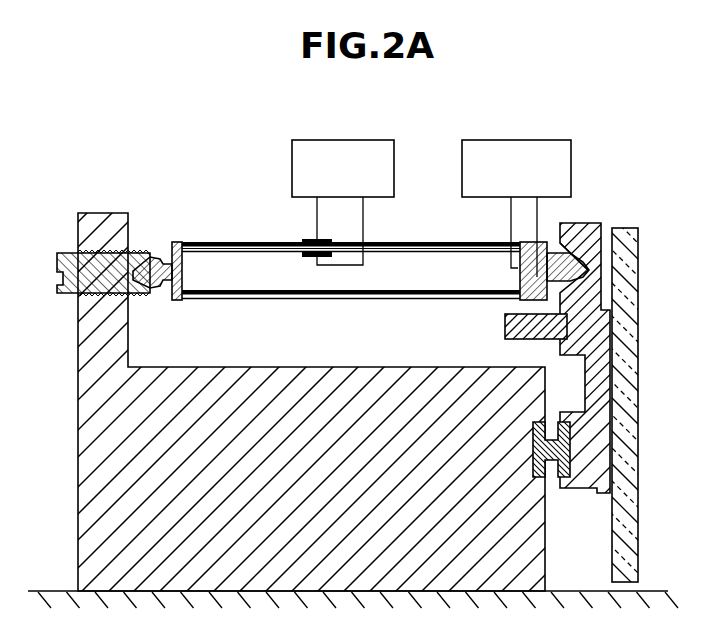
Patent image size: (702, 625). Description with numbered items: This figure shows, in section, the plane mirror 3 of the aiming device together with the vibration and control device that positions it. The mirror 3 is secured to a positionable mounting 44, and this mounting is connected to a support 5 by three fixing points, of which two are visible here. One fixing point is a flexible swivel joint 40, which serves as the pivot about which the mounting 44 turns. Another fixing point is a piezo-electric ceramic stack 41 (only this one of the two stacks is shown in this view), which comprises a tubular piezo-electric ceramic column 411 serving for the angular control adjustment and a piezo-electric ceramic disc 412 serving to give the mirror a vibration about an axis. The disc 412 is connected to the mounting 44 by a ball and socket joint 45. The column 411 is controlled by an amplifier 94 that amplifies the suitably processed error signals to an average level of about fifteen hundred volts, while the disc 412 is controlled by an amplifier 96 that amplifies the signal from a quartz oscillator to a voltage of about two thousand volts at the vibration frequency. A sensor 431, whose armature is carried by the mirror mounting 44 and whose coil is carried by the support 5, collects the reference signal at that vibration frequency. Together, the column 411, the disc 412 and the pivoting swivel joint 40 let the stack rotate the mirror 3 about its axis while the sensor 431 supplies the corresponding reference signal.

The plane mirror 3 is at (633, 246).
The support 5 is at (353, 472).
The flexible swivel joint 40 is at (547, 462).
The piezo-electric ceramic stack 41 is at (442, 280).
The tubular piezo-electric ceramic column 411 is at (226, 242).
The piezo-electric ceramic disc 412 is at (520, 246).
The sensor 431 is at (505, 329).
The positionable mounting 44 is at (583, 478).
The ball and socket joint 45 is at (548, 255).
The amplifier 94 is at (292, 181).
The amplifier 96 is at (571, 170).